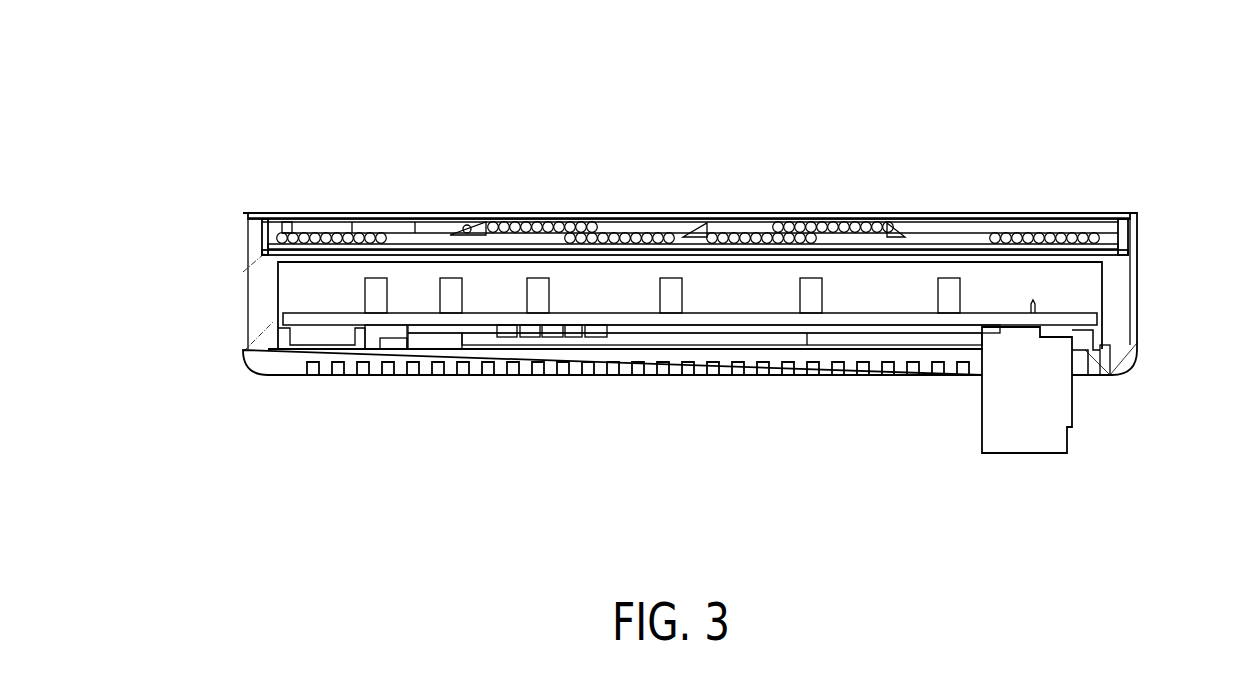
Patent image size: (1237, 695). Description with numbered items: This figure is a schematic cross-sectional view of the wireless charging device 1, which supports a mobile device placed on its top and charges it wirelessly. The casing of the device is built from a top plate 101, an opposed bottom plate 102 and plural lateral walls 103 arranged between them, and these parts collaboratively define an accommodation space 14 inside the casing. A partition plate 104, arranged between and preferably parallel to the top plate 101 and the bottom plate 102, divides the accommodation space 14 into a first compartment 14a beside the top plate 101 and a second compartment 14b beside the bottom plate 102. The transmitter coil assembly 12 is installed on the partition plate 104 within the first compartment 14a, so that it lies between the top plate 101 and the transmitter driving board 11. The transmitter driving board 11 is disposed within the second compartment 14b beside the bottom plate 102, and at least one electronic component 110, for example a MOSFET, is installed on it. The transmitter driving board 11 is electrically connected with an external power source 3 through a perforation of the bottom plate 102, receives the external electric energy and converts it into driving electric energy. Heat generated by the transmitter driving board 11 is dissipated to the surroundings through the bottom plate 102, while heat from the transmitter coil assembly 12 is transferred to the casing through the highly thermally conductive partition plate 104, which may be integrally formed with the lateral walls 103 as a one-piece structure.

The wireless charging device 1 is at (1153, 49).
The external power source 3 is at (1053, 412).
The transmitter driving board 11 is at (1068, 318).
The transmitter coil assembly 12 is at (540, 223).
The accommodation space 14 is at (170, 242).
The first compartment 14a is at (272, 226).
The second compartment 14b is at (287, 298).
The top plate 101 is at (343, 215).
The bottom plate 102 is at (480, 375).
The lateral walls 103 is at (1070, 317).
The partition plate 104 is at (435, 238).
The electronic component 110 is at (670, 293).